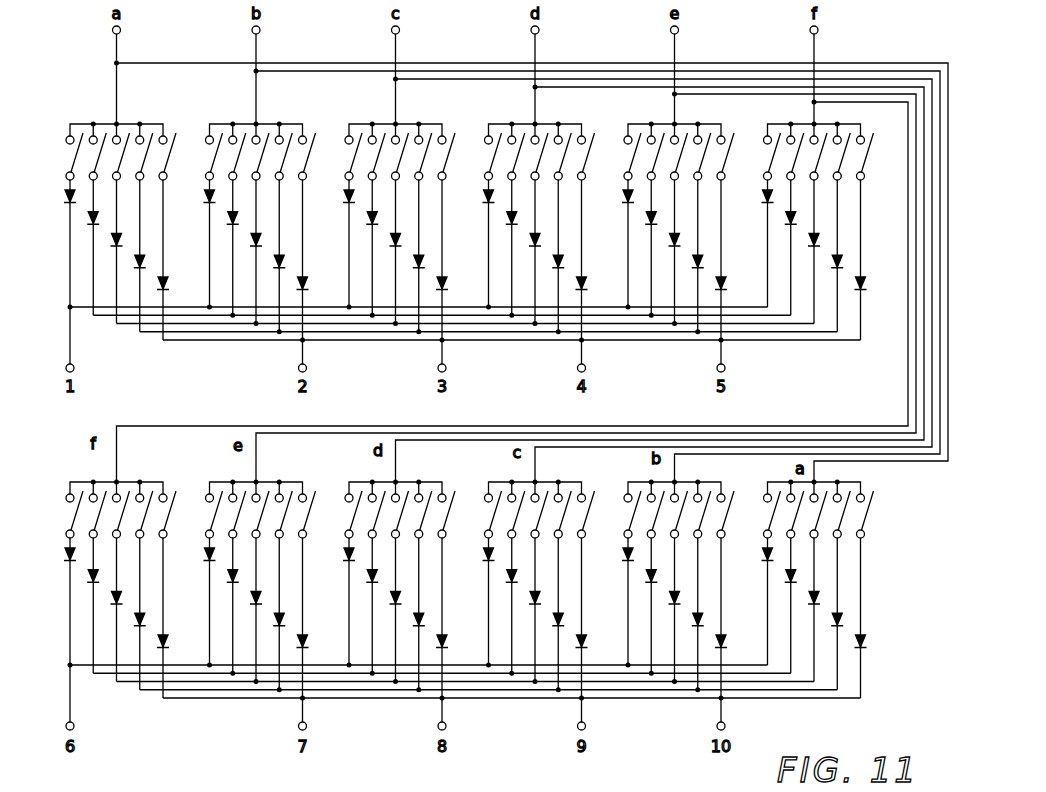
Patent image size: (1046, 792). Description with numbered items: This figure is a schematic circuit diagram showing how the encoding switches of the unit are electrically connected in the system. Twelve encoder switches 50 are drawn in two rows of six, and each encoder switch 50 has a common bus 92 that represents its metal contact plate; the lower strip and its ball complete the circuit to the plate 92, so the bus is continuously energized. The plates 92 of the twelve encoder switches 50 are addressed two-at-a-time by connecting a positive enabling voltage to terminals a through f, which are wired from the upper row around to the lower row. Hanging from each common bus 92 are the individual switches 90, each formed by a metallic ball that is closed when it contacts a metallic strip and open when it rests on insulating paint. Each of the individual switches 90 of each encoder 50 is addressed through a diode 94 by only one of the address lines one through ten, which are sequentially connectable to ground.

The encoder switch 50 is at (475, 384).
The metallic ball 90 is at (757, 530).
The metal contact plate 92 is at (877, 475).
The diode 94 is at (868, 597).